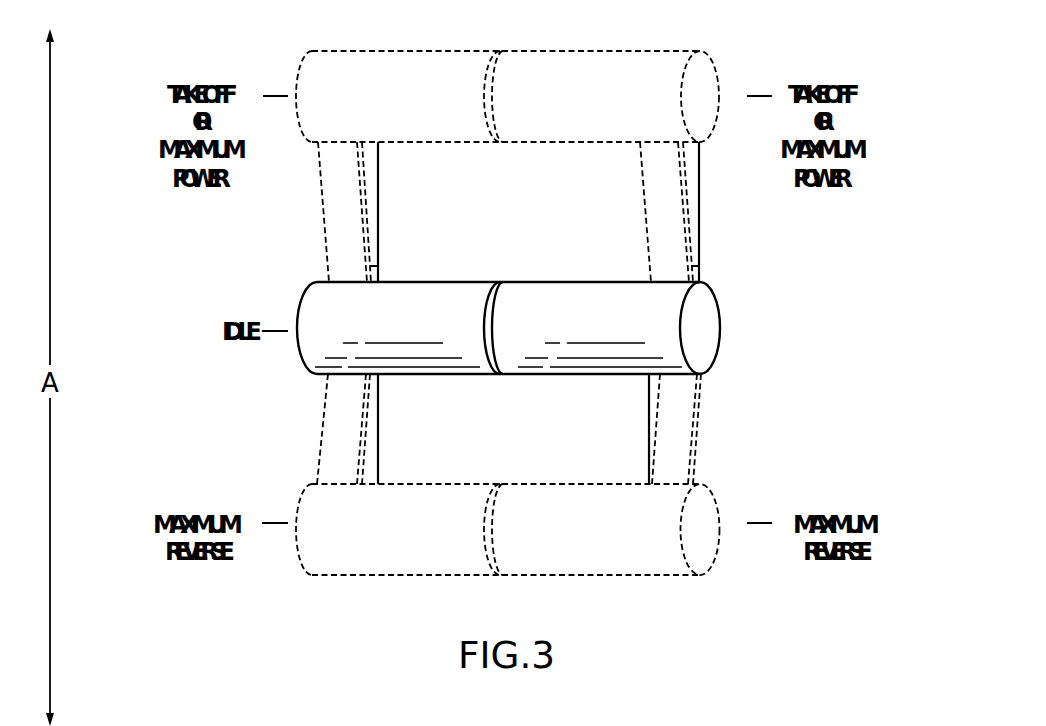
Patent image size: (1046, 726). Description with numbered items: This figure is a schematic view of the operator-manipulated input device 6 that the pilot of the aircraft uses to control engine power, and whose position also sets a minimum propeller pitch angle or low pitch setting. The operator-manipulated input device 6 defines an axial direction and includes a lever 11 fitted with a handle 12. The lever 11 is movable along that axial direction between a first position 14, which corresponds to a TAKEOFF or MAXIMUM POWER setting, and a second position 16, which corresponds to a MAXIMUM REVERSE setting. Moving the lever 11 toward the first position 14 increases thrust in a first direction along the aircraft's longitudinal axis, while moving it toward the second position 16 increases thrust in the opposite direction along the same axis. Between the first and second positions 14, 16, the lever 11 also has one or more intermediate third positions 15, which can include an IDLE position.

The operator-manipulated input device 6 is at (173, 650).
The lever 11 is at (663, 195).
The handle 12 is at (566, 299).
The first position 14 is at (273, 81).
The intermediate third position 15 is at (273, 345).
The second position 16 is at (273, 540).